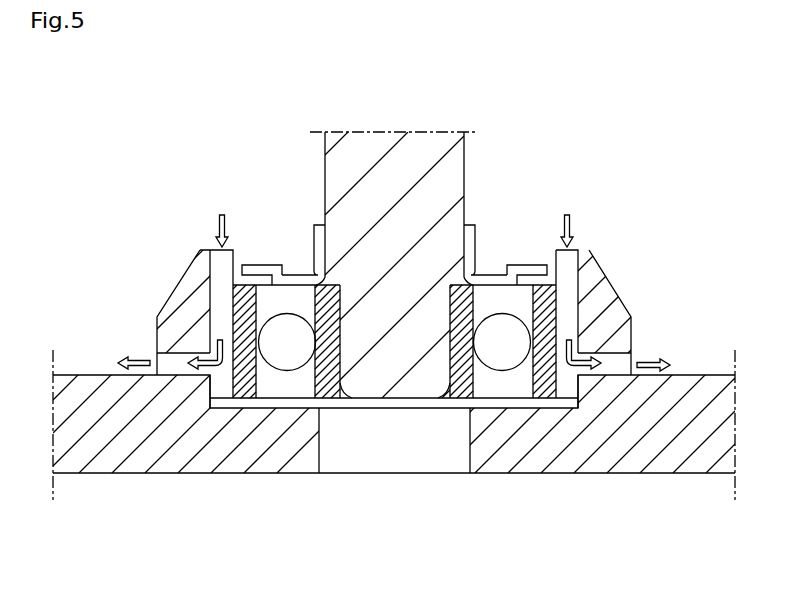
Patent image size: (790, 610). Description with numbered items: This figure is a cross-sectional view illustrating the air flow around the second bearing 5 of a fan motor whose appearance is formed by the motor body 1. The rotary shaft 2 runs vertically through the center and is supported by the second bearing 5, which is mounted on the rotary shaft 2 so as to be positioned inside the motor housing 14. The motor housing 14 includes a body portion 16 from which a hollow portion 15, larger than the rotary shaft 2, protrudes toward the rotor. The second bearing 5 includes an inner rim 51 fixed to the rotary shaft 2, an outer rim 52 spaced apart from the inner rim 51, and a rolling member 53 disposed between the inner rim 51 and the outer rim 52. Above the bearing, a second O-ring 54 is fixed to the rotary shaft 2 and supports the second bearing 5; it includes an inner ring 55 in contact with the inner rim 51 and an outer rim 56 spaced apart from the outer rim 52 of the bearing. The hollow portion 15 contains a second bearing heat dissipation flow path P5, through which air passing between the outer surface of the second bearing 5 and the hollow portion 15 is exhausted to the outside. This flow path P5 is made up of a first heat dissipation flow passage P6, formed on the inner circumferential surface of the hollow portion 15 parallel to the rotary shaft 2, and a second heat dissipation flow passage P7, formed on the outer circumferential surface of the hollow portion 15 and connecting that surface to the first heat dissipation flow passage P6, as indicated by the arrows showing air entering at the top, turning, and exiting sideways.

The motor body 1 is at (84, 491).
The rotary shaft 2 is at (389, 142).
The second bearing 5 is at (394, 425).
The motor housing 14 is at (128, 455).
The hollow portion 15 is at (603, 280).
The body portion 16 is at (262, 458).
The inner rim 51 is at (460, 395).
The outer rim 52 is at (543, 395).
The rolling member 53 is at (500, 362).
The second O-ring 54 is at (406, 196).
The inner ring 55 is at (492, 280).
The outer rim 56 is at (528, 267).
The second bearing heat dissipation flow path P5 is at (692, 255).
The first heat dissipation flow passage P6 is at (570, 287).
The second heat dissipation flow passage P7 is at (613, 363).